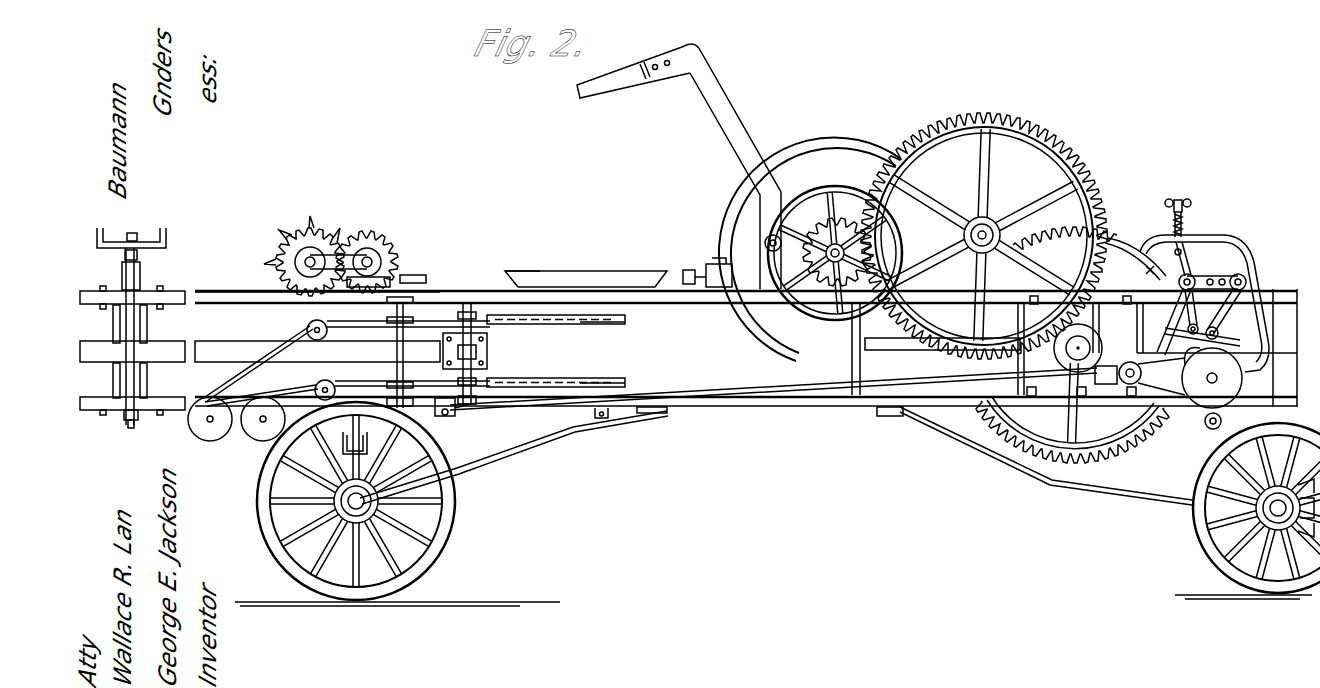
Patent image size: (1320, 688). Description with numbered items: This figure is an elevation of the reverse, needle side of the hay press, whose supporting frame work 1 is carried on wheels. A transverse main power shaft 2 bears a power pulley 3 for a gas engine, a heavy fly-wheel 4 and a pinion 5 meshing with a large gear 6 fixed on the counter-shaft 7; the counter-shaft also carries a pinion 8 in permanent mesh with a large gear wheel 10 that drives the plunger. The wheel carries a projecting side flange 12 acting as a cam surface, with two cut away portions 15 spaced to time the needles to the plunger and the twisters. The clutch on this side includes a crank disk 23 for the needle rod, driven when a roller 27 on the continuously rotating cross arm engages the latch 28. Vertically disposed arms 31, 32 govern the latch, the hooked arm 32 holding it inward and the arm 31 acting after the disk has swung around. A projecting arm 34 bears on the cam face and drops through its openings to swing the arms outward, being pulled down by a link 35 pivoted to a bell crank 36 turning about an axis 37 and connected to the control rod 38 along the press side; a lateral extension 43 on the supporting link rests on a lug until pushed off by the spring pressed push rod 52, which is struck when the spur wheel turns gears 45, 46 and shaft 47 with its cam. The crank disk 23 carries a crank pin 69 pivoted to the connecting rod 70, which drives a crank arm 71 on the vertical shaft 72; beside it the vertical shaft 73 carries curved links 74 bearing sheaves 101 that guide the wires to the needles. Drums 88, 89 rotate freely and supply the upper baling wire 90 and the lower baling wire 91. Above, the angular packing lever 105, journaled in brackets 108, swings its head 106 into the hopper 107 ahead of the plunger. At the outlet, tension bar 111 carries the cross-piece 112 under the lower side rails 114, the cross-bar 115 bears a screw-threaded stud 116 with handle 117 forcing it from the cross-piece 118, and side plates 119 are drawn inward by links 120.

The supporting frame work 1 is at (880, 410).
The main power shaft 2 is at (842, 230).
The power pulley 3 is at (808, 226).
The fly-wheel 4 is at (848, 140).
The pinion 5 is at (800, 230).
The large gear 6 is at (984, 222).
The counter-shaft 7 is at (990, 226).
The pinion 8 is at (970, 210).
The large gear wheel 10 is at (1158, 440).
The projecting side flange 12 is at (1118, 240).
The cut away portions 15 is at (1144, 270).
The crank disk 23 is at (1212, 378).
The roller 27 is at (1205, 360).
The latch 28 is at (1245, 362).
The arm 31 is at (1265, 330).
The arm 32 is at (1165, 335).
The projecting arm 34 is at (1230, 252).
The link 35 is at (1248, 290).
The bell crank 36 is at (1220, 336).
The axis 37 is at (1175, 322).
The control rod 38 is at (920, 350).
The lateral extension 43 is at (707, 263).
The gear 45 is at (318, 240).
The gear 46 is at (385, 240).
The shaft 47 is at (372, 262).
The push rod 52 is at (500, 272).
The crank pin 69 is at (1130, 366).
The connecting rod 70 is at (788, 394).
The crank arm 71 is at (455, 410).
The vertical shaft 72 is at (488, 352).
The vertical shaft 73 is at (404, 355).
The curved links 74 is at (497, 326).
The drum 88 is at (210, 441).
The drum 89 is at (261, 441).
The upper baling wire 90 is at (368, 322).
The lower baling wire 91 is at (375, 382).
The sheaves 101 is at (548, 378).
The packing lever 105 is at (742, 112).
The head 106 is at (633, 80).
The hopper 107 is at (578, 271).
The brackets 108 is at (764, 243).
The tension bar 111 is at (148, 332).
The cross-piece 112 is at (126, 422).
The lower side rails 114 is at (232, 302).
The cross-bar 115 is at (125, 272).
The screw-threaded stud 116 is at (133, 236).
The handle 117 is at (166, 243).
The cross-piece 118 is at (141, 255).
The side plates 119 is at (260, 351).
The links 120 is at (118, 375).